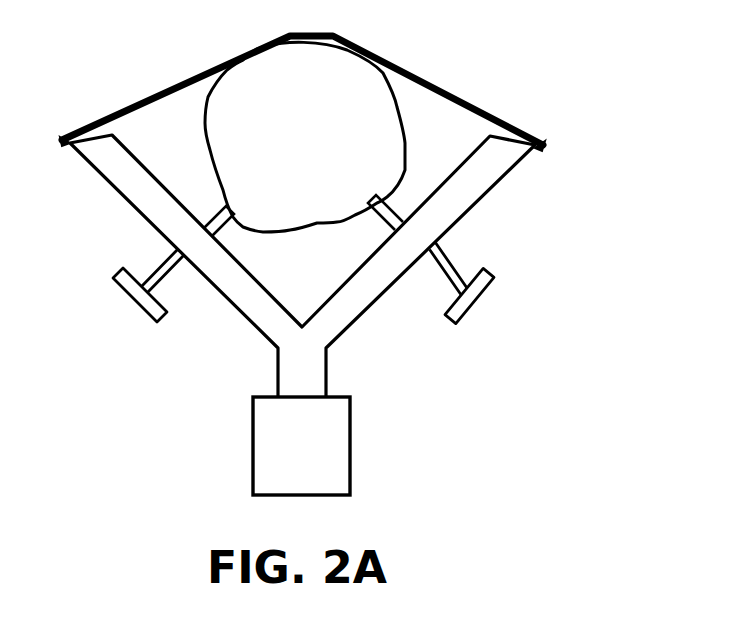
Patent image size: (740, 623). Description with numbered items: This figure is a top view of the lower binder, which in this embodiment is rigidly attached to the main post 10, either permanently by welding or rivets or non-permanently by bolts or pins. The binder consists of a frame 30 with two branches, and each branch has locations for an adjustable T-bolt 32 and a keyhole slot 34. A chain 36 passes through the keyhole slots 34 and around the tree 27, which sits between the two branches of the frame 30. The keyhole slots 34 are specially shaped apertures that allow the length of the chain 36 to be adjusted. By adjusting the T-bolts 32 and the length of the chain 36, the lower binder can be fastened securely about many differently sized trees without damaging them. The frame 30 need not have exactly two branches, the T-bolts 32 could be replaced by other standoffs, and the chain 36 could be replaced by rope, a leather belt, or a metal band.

The main post 10 is at (355, 446).
The tree 27 is at (305, 137).
The frame 30 is at (316, 266).
The T-bolts 32 is at (325, 321).
The keyhole slots 34 is at (311, 95).
The chain 36 is at (302, 75).